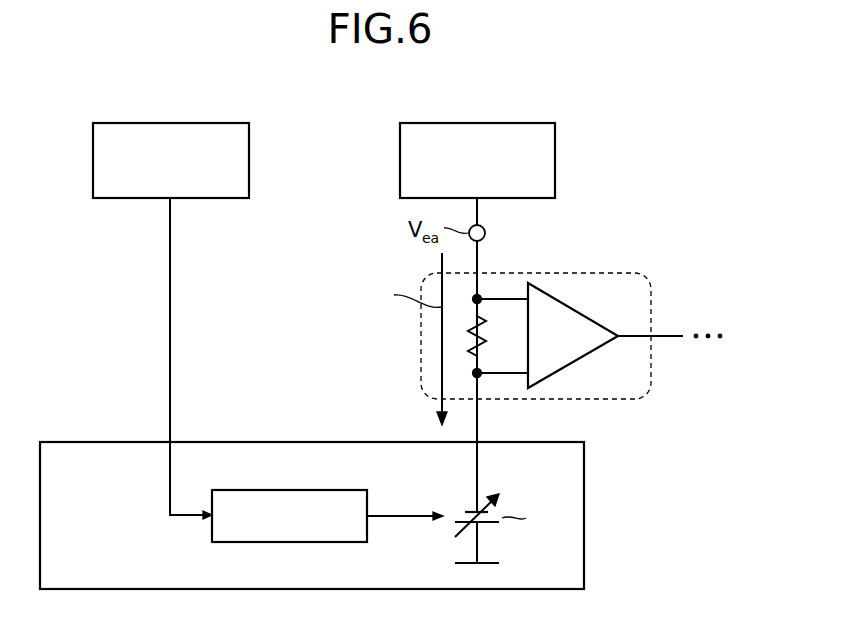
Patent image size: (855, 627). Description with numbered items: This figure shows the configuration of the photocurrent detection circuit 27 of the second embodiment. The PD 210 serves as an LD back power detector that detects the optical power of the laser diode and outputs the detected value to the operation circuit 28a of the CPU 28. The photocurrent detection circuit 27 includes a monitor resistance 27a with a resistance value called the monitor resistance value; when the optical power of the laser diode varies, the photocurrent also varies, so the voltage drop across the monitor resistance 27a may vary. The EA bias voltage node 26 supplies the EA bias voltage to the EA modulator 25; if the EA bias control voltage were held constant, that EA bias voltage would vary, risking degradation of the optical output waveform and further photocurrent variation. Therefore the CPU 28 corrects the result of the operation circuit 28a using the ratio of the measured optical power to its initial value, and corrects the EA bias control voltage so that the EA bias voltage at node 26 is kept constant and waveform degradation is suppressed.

The PD 210 is at (170, 123).
The EA modulator 25 is at (477, 123).
The bias voltage node Vea 26 is at (486, 233).
The photocurrent detection circuit 27 is at (612, 272).
The monitor resistance 27a is at (470, 332).
The CPU 28 is at (252, 442).
The operation circuit 28a is at (290, 490).